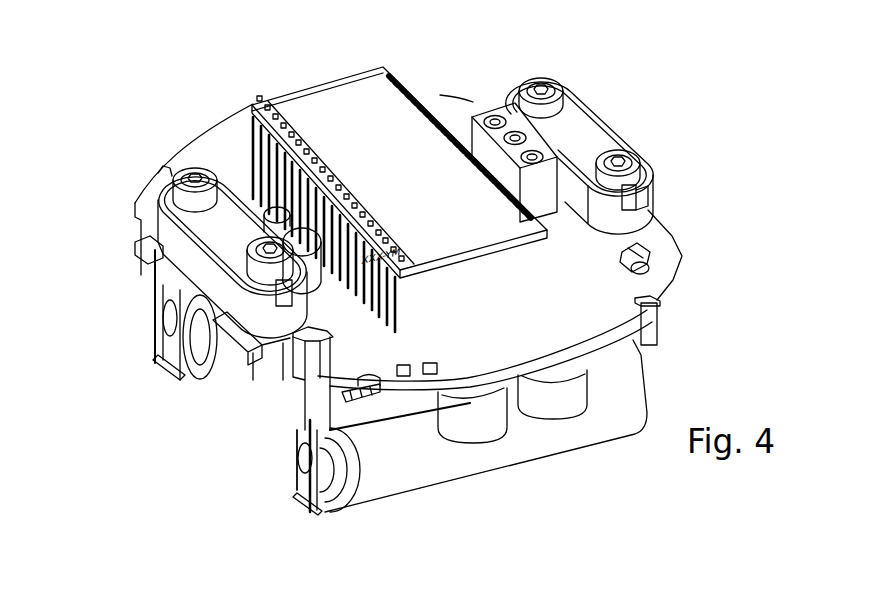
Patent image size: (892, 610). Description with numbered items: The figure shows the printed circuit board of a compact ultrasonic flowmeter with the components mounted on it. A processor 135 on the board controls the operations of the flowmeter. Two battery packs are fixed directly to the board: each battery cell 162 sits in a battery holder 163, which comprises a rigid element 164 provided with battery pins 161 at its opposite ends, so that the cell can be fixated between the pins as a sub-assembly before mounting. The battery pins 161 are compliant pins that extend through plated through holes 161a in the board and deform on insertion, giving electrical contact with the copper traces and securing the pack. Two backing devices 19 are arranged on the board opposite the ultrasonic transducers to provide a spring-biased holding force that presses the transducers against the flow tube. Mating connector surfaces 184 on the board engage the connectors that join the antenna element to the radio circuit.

The backing device 19 is at (226, 230).
The processor 135 is at (637, 272).
The rigid element 164 is at (637, 338).
The battery pin 161 is at (305, 378).
The plated through hole 161a is at (313, 425).
The battery holder 163 is at (296, 338).
The mating connector surface 184 is at (403, 377).
The battery cell 162 is at (543, 438).